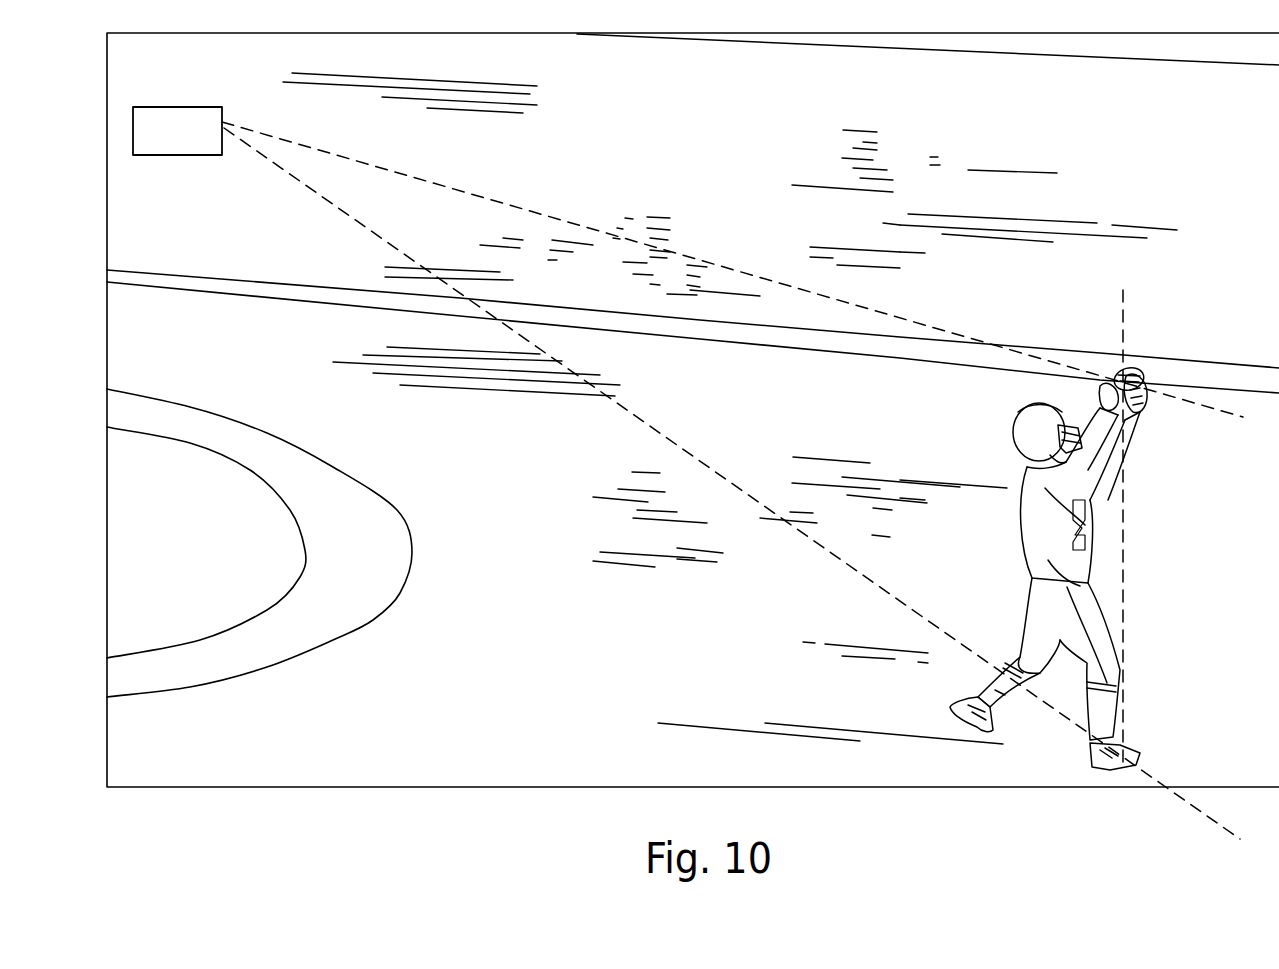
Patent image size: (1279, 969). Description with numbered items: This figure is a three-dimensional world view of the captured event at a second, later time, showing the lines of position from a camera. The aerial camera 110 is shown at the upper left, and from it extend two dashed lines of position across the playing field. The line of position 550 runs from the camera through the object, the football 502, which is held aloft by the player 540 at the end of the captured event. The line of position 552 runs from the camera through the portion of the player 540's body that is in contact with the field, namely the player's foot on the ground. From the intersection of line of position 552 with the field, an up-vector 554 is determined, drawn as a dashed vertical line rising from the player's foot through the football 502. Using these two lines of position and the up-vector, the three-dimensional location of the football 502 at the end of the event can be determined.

The aerial camera 110 is at (196, 141).
The line of position 550 is at (481, 200).
The line of position 552 is at (645, 422).
The up-vector 554 is at (1126, 318).
The football 502 is at (1134, 368).
The player 540 is at (1015, 425).